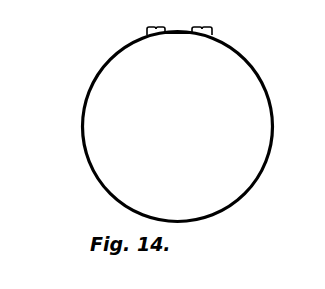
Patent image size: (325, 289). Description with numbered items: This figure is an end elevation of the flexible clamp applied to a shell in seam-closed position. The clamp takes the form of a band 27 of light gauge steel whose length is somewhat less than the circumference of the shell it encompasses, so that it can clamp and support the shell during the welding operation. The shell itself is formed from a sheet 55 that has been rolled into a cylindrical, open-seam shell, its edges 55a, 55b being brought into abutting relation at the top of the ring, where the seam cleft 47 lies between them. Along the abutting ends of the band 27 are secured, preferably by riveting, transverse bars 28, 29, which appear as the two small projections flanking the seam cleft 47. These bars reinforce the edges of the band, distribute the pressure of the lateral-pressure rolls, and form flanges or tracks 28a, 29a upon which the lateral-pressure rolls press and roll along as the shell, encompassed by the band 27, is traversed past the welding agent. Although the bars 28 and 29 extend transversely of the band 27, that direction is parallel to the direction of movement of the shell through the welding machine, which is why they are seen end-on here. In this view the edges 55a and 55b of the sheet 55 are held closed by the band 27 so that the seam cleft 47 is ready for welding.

The band 27 is at (83, 97).
The sheet 55 is at (266, 160).
The transverse bar 29 is at (158, 26).
The transverse bar 28 is at (200, 26).
The flange or track 29a is at (147, 30).
The flange or track 28a is at (210, 30).
The edge of sheet 55a is at (174, 34).
The seam cleft 47 is at (178, 34).
The edge of sheet 55b is at (181, 34).